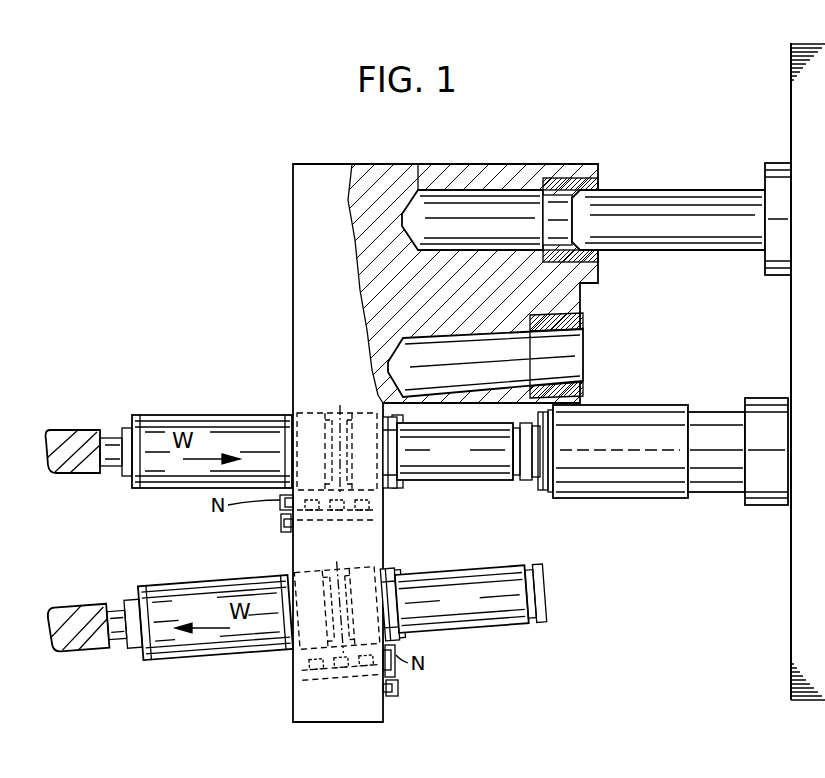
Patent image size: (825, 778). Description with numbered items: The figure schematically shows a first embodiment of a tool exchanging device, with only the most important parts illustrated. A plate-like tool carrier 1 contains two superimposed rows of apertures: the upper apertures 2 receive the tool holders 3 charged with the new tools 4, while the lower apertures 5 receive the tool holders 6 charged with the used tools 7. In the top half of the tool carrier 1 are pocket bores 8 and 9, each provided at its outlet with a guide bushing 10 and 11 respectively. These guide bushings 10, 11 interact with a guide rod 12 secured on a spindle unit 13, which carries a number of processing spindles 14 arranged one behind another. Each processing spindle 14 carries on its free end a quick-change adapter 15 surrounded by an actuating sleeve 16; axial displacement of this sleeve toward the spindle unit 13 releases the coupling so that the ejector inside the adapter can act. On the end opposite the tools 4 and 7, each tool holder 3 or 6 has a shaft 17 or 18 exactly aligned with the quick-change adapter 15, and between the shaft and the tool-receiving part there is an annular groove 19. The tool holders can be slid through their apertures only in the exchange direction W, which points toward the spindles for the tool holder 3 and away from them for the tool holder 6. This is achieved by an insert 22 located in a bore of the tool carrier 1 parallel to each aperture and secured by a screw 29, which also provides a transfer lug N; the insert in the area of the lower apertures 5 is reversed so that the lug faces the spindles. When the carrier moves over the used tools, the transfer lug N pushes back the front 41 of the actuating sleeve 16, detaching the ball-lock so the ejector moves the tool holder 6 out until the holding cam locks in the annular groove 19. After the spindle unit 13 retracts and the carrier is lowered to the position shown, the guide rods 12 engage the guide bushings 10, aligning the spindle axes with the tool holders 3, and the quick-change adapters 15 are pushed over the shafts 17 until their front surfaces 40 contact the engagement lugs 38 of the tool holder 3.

The tool carrier 1 is at (296, 214).
The upper apertures 2 is at (300, 408).
The tool holder 3 is at (215, 428).
The new tool 4 is at (72, 440).
The lower apertures 5 is at (300, 576).
The tool holder 6 is at (190, 645).
The used tool 7 is at (80, 640).
The pocket bore 8 is at (500, 205).
The pocket bore 9 is at (478, 340).
The guide bushing 10 is at (600, 186).
The guide bushing 11 is at (584, 322).
The guide rod 12 is at (682, 208).
The spindle unit 13 is at (803, 96).
The processing spindle 14 is at (720, 484).
The quick-change adapter 15 is at (649, 445).
The actuating sleeve 16 is at (652, 488).
The shaft 17 is at (463, 467).
The shaft 18 is at (490, 614).
The annular groove 19 is at (340, 418).
The insert 22 is at (385, 522).
The screw 29 is at (280, 522).
The engagement lugs 38 is at (400, 488).
The front surface 40 is at (538, 489).
The front 41 is at (550, 494).